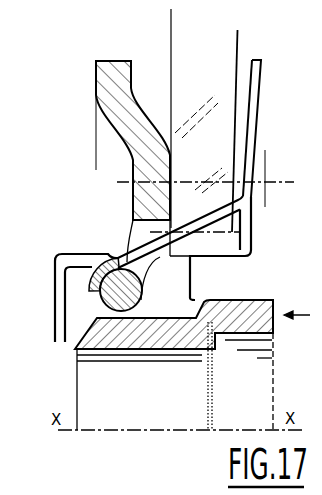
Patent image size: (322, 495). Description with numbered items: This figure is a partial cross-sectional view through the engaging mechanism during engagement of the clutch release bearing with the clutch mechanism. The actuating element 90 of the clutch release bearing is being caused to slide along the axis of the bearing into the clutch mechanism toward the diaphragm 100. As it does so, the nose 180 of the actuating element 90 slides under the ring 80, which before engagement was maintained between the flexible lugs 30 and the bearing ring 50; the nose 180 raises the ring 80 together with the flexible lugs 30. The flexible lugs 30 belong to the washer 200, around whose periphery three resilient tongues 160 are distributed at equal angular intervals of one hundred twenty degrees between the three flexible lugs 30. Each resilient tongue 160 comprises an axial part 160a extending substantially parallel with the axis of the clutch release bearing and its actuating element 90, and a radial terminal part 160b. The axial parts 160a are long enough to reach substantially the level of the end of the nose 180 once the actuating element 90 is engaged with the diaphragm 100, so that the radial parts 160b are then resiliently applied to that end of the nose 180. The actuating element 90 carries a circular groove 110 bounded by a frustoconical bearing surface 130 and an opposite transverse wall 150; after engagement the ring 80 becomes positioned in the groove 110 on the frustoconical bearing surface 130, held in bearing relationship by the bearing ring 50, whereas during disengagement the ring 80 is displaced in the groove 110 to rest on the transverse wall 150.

The washer 200 is at (281, 107).
The diaphragm 100 is at (223, 52).
The bearing ring 50 is at (126, 118).
The resilient tongue 160 is at (78, 253).
The axial part of tongue 160a is at (208, 263).
The radial terminal part of tongue 160b is at (55, 329).
The flexible lug 30 is at (90, 280).
The ring 80 is at (104, 297).
The actuating element 90 is at (262, 287).
The frustoconical bearing surface 130 is at (150, 320).
The circular groove 110 is at (170, 320).
The nose 180 is at (103, 353).
The transverse wall 150 is at (185, 313).